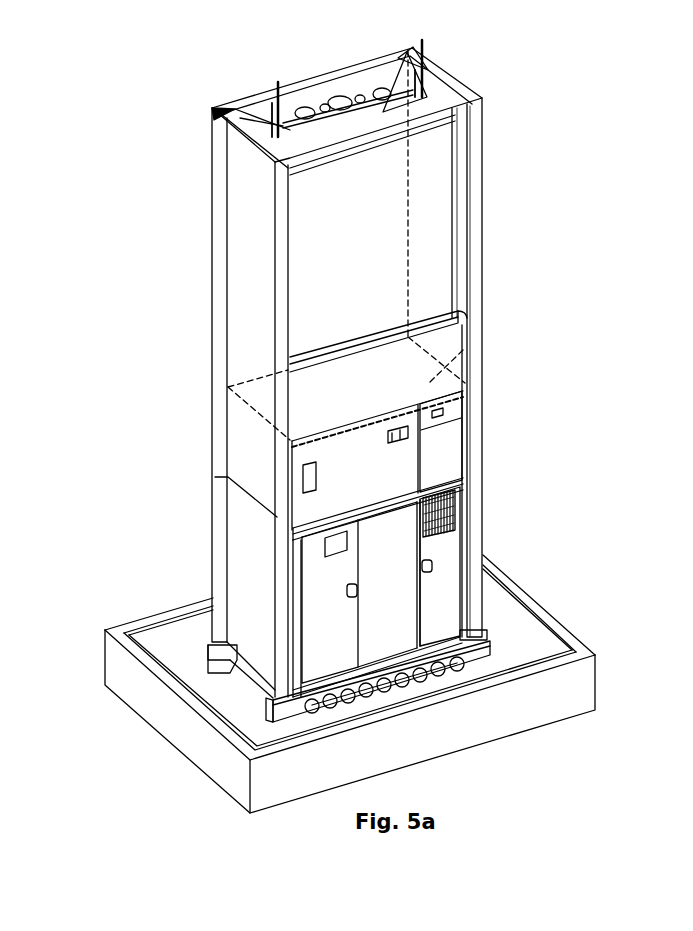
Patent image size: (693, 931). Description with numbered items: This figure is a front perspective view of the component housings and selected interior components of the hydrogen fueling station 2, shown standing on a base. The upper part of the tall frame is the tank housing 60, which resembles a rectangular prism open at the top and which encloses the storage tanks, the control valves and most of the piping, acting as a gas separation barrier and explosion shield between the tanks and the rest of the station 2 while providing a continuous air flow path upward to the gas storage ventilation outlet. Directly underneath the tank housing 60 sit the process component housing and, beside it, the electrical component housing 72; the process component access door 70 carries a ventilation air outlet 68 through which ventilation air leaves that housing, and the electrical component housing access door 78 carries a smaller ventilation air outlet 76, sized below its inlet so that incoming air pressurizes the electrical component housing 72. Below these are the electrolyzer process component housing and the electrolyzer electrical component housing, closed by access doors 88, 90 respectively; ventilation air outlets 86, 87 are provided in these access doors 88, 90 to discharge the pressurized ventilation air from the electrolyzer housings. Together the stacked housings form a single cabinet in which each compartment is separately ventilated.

The station 2 is at (568, 98).
The tank housing 60 is at (358, 253).
The ventilation air outlet 68 is at (307, 480).
The process component access door 70 is at (342, 460).
The electrical component housing 72 is at (450, 461).
The ventilation air outlet 76 is at (443, 408).
The electrical component housing access door 78 is at (450, 432).
The ventilation air outlet 86 is at (338, 542).
The ventilation air outlet 87 is at (450, 517).
The access door 88 is at (382, 578).
The access door 90 is at (443, 602).